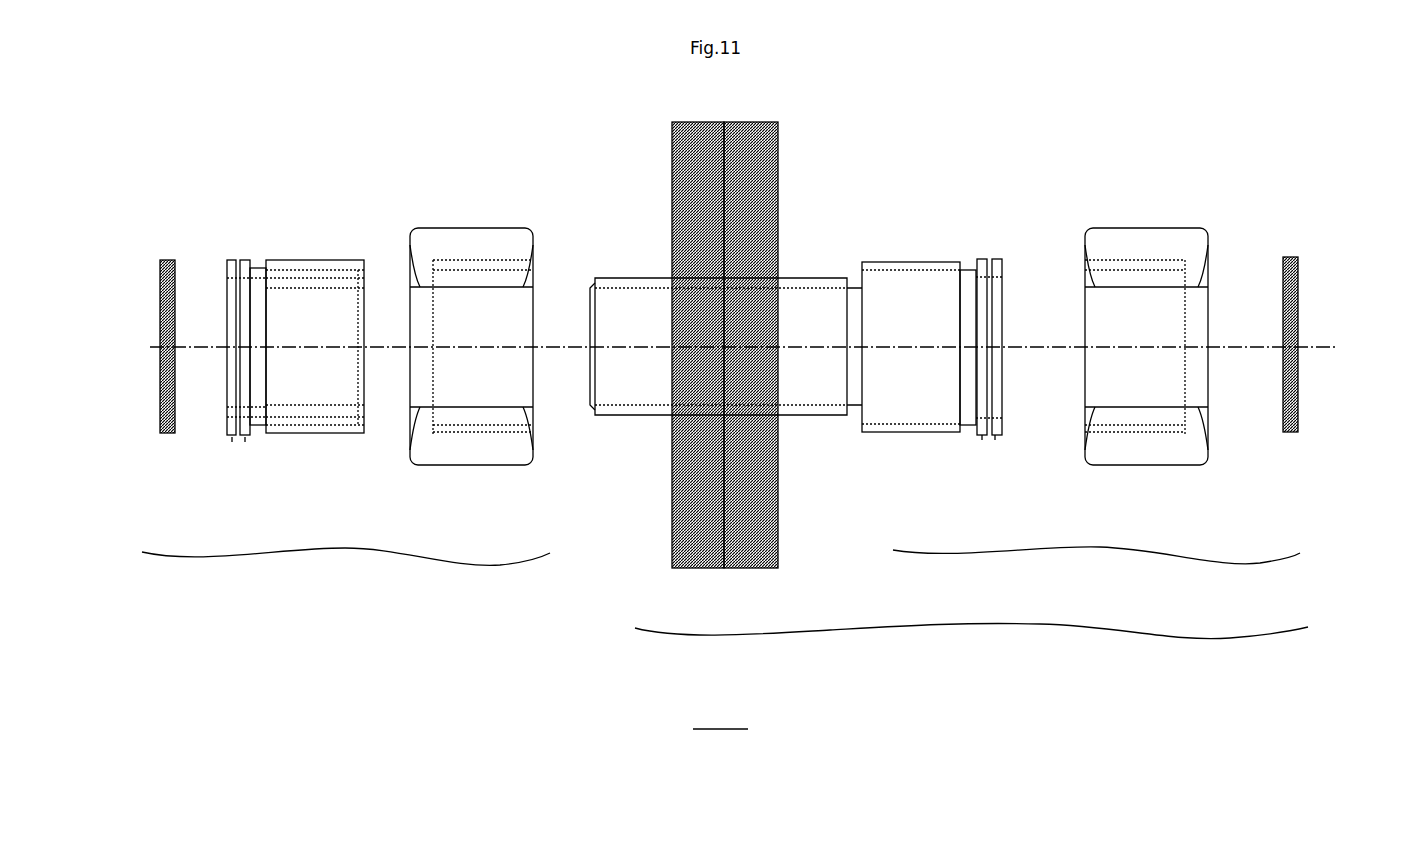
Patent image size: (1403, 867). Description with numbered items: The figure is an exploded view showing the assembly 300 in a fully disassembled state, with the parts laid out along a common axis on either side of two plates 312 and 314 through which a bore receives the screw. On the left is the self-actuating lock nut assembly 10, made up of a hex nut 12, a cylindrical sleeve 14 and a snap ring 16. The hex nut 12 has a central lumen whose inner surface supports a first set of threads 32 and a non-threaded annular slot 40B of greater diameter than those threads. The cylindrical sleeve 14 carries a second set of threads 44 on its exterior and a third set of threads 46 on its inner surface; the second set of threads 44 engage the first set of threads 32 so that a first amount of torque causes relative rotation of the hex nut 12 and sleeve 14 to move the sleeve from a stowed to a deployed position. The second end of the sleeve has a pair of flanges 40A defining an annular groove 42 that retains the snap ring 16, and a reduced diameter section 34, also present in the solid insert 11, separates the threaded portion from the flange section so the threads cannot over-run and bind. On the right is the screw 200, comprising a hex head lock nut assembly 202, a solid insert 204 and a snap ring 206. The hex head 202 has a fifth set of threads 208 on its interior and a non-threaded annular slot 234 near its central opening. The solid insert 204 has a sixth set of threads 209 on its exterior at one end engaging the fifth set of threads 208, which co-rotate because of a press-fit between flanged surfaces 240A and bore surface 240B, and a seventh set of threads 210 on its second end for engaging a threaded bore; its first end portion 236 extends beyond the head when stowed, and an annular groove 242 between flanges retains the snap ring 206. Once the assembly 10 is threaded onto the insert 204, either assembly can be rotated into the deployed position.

The self-actuating lock nut assembly 10 is at (346, 567).
The solid insert 11 is at (1096, 564).
The hex nut 12 is at (488, 250).
The cylindrical sleeve 14 is at (325, 310).
The snap ring 16 is at (153, 290).
The first set of threads 32 is at (488, 428).
The reduced diameter section 34 is at (258, 262).
The flanges 40A is at (245, 437).
The annular slot 40B is at (422, 432).
The annular groove 42 is at (239, 257).
The second set of threads 44 is at (288, 270).
The third set of threads 46 is at (300, 405).
The screw 200 is at (971, 642).
The hex head lock nut assembly 202 is at (1125, 245).
The solid insert 204 is at (757, 323).
The snap ring 206 is at (1303, 278).
The fifth set of threads 208 is at (1143, 268).
The sixth set of threads 209 is at (902, 260).
The seventh set of threads 210 is at (640, 280).
The annular slot 234 is at (970, 435).
The first end portion 236 is at (927, 373).
The flanged surfaces 240A is at (993, 437).
The bore surface 240B is at (1192, 433).
The annular groove 242 is at (988, 257).
The assembly 300 is at (720, 718).
The plate 312 is at (757, 163).
The plate 314 is at (687, 170).